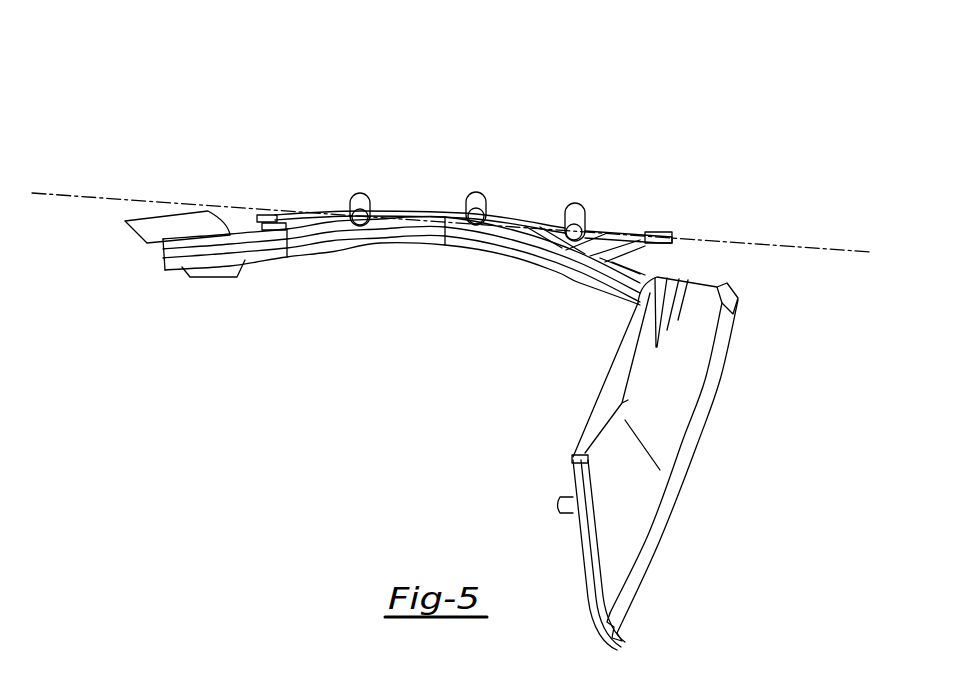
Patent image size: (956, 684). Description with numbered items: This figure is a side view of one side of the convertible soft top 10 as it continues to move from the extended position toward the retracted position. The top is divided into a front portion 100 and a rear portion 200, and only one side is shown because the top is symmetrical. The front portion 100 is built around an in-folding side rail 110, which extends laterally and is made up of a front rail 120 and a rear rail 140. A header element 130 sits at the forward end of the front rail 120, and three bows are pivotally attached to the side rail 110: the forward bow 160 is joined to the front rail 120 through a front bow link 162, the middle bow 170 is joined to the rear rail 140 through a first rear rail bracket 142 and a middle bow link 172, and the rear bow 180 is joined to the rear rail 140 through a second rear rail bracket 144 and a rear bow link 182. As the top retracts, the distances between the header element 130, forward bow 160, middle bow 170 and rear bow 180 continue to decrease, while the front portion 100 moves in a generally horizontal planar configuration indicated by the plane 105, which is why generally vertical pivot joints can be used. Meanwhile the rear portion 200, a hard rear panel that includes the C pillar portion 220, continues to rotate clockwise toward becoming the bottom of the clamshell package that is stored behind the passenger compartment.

The convertible soft top 10 is at (268, 115).
The front portion 100 is at (573, 105).
The plane 105 is at (58, 193).
The in-folding side rail 110 is at (482, 290).
The front rail 120 is at (362, 250).
The header element 130 is at (205, 212).
The rear rail 140 is at (556, 265).
The first rear rail bracket 142 is at (612, 192).
The second rear rail bracket 144 is at (652, 262).
The forward bow 160 is at (358, 193).
The front bow link 162 is at (305, 215).
The middle bow 170 is at (472, 192).
The middle bow link 172 is at (521, 214).
The rear bow 180 is at (576, 202).
The rear bow link 182 is at (636, 232).
The rear portion 200 is at (724, 410).
The C pillar portion 220 is at (670, 412).